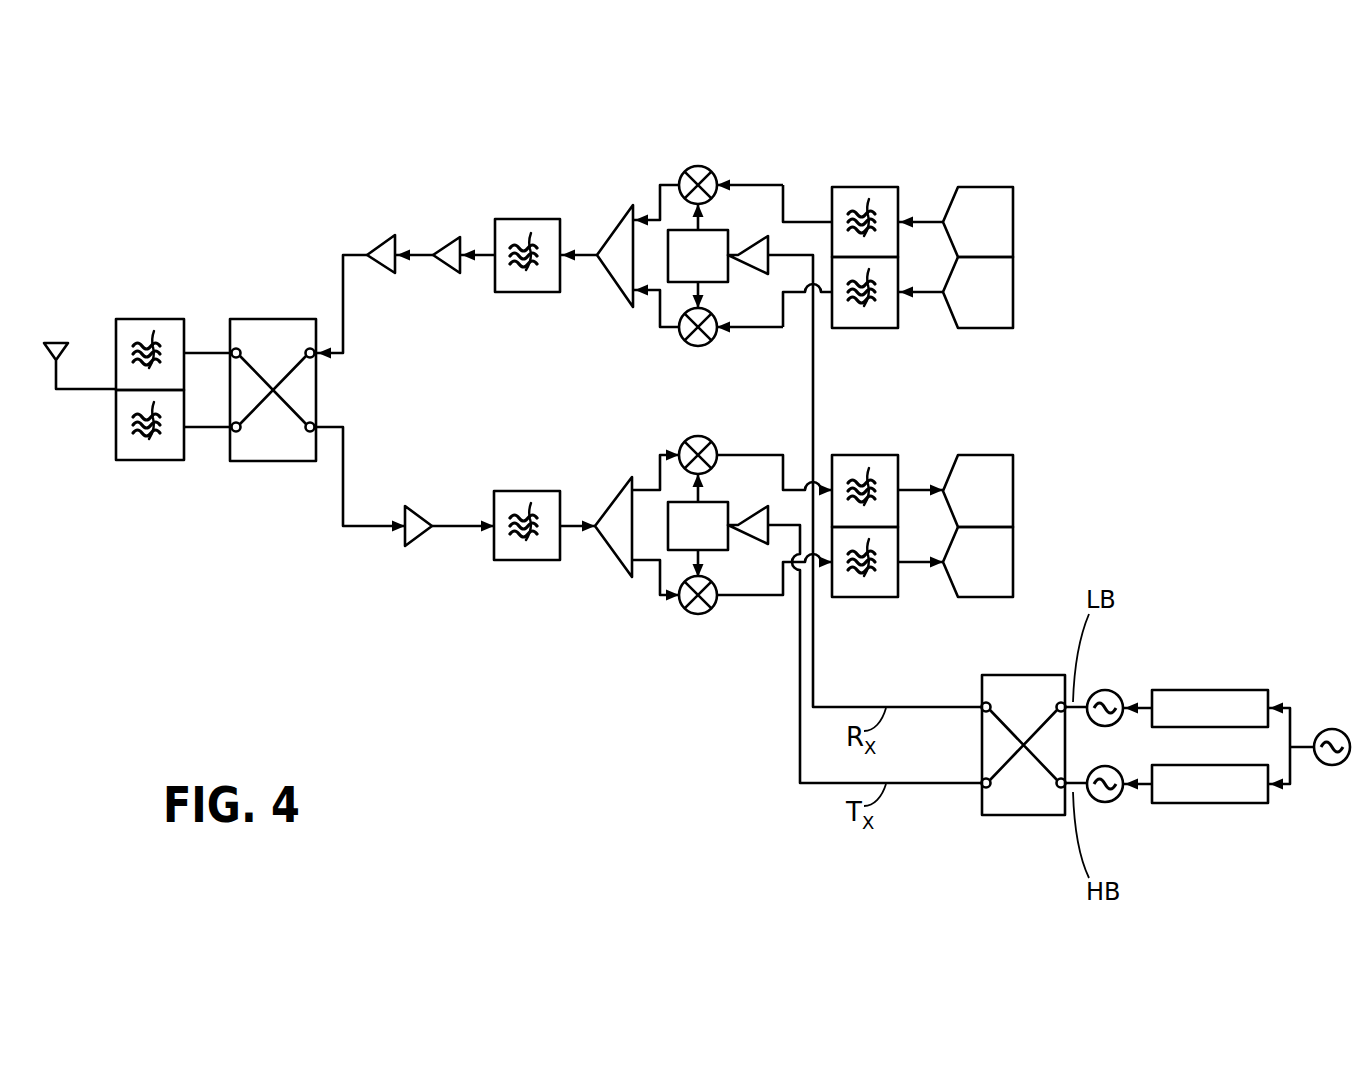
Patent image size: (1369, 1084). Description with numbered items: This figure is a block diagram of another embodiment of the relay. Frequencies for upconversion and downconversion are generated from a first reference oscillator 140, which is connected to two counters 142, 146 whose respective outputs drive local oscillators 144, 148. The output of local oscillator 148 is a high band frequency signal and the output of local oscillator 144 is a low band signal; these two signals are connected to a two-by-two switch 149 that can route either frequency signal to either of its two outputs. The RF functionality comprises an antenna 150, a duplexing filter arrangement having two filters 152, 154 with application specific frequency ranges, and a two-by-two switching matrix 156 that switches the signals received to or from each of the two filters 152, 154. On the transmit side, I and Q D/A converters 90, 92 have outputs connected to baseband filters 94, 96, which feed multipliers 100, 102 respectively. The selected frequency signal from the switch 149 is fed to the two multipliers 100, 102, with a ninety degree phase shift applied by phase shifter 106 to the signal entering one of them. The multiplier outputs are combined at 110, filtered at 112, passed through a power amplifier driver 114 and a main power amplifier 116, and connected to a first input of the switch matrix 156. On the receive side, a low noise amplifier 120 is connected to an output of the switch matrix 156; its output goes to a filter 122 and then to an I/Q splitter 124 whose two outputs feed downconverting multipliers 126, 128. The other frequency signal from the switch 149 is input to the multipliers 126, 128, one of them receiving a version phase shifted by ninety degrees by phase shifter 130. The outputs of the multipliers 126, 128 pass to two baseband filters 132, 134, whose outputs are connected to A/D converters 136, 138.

The I D/A converter 90 is at (976, 187).
The Q D/A converter 92 is at (968, 330).
The baseband filter 94 is at (858, 187).
The baseband filter 96 is at (862, 330).
The multiplier 100 is at (698, 166).
The multiplier 102 is at (690, 345).
The phase shifter 106 is at (698, 256).
The combiner 110 is at (606, 238).
The filter 112 is at (526, 219).
The power amplifier driver 114 is at (440, 248).
The main power amplifier 116 is at (374, 250).
The low noise amplifier 120 is at (417, 505).
The filter 122 is at (528, 491).
The I/Q splitter 124 is at (605, 506).
The downconverting multiplier 126 is at (690, 445).
The downconverting multiplier 128 is at (690, 613).
The phase shifter 130 is at (698, 526).
The baseband filter 132 is at (862, 455).
The baseband filter 134 is at (862, 600).
The A/D converter 136 is at (975, 455).
The A/D converter 138 is at (974, 600).
The first reference oscillator 140 is at (1329, 729).
The counter 142 is at (1210, 690).
The local oscillator 144 is at (1102, 690).
The counter 146 is at (1203, 803).
The local oscillator 148 is at (1100, 803).
The 2x2 switch 149 is at (1023, 816).
The antenna 150 is at (62, 337).
The filter 152 is at (152, 318).
The filter 154 is at (154, 462).
The 2x2 switching matrix 156 is at (272, 318).